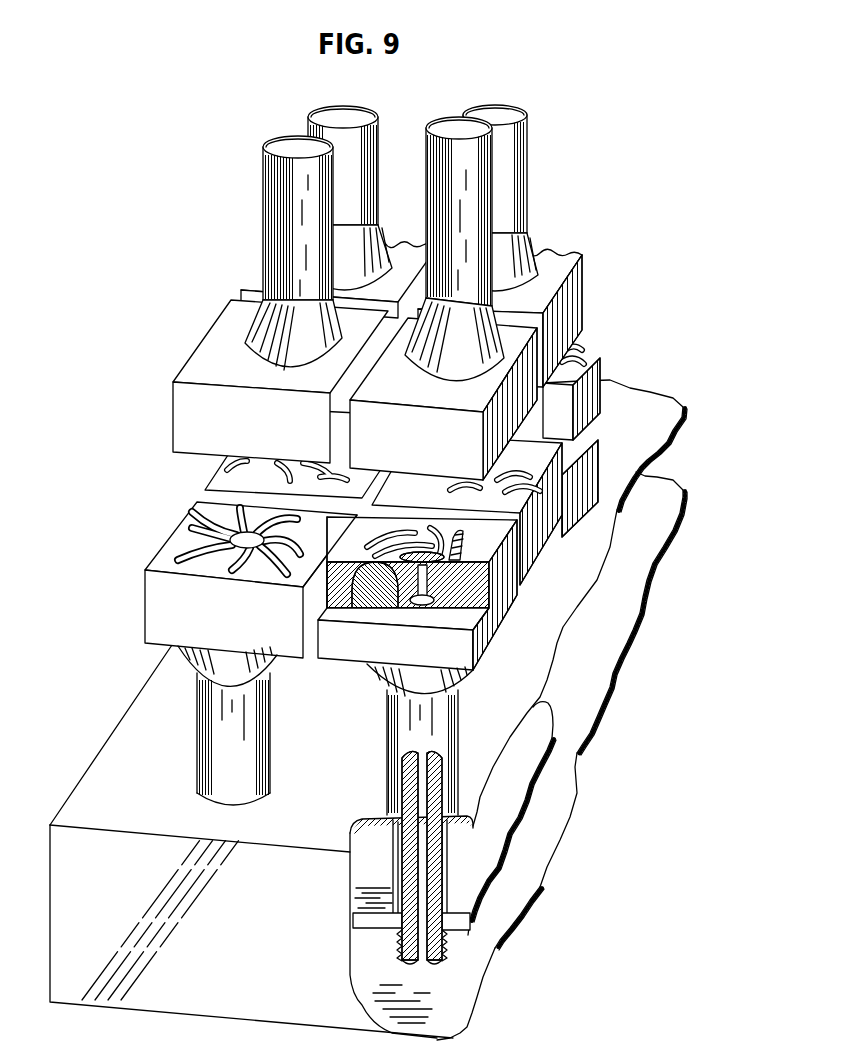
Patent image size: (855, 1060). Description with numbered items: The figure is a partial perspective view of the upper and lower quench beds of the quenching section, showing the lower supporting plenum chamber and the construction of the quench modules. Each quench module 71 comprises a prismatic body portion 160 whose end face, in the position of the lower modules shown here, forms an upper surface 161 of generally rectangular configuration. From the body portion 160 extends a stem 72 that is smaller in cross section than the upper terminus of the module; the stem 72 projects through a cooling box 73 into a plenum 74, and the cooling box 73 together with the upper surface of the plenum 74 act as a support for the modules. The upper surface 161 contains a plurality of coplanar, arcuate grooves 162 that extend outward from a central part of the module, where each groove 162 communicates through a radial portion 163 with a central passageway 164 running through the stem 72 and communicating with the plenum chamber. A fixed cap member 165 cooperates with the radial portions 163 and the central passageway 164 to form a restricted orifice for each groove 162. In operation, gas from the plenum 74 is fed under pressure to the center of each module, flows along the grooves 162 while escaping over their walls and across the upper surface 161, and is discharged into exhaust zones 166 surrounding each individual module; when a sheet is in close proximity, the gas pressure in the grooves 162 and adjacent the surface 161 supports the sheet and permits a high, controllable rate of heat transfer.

The quench module 71 is at (232, 579).
The stem 72 is at (201, 747).
The cooling box 73 is at (372, 893).
The plenum 74 is at (392, 978).
The prismatic body portion 160 is at (155, 632).
The upper surface 161 is at (193, 512).
The arcuate grooves 162 is at (187, 545).
The radial portion 163 is at (400, 585).
The central passageway 164 is at (414, 598).
The fixed cap member 165 is at (441, 566).
The exhaust zones 166 is at (402, 617).